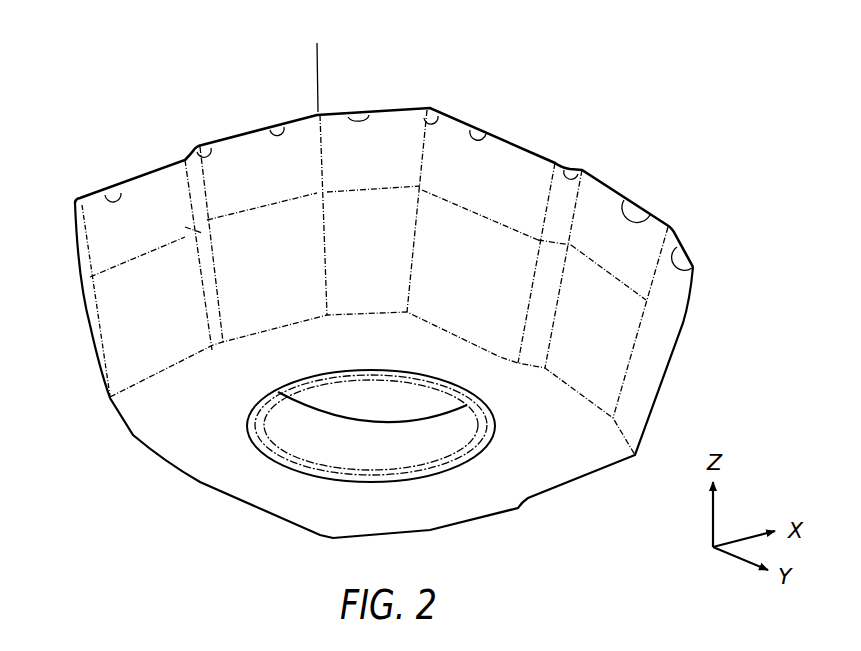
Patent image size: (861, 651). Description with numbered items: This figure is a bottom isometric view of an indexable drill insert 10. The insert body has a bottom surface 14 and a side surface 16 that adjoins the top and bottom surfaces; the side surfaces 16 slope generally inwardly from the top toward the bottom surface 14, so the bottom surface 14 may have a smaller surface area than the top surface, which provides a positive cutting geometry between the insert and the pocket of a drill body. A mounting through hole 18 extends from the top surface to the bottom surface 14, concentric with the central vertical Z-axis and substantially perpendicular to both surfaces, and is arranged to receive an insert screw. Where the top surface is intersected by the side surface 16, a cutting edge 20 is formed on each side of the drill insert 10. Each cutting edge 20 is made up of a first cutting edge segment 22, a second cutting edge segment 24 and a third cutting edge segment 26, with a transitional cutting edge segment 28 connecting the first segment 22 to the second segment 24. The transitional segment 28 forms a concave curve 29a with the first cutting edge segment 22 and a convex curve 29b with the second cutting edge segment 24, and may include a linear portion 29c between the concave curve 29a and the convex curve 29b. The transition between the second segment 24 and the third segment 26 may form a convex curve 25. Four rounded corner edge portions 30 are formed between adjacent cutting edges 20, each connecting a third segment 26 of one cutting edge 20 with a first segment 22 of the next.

The indexable drill insert 10 is at (389, 291).
The bottom surface 14 is at (163, 404).
The side surface 16 is at (124, 329).
The mounting through hole 18 is at (353, 442).
The cutting edge 20 is at (256, 125).
The first cutting edge segment 22 is at (115, 196).
The second cutting edge segment 24 is at (285, 131).
The convex curve 25 is at (319, 66).
The third cutting edge segment 26 is at (355, 122).
The transitional cutting edge segment 28 is at (213, 143).
The concave curve 29a is at (555, 165).
The convex curve 29b is at (590, 168).
The linear portion 29c is at (567, 192).
The corner edge portion 30 is at (437, 126).